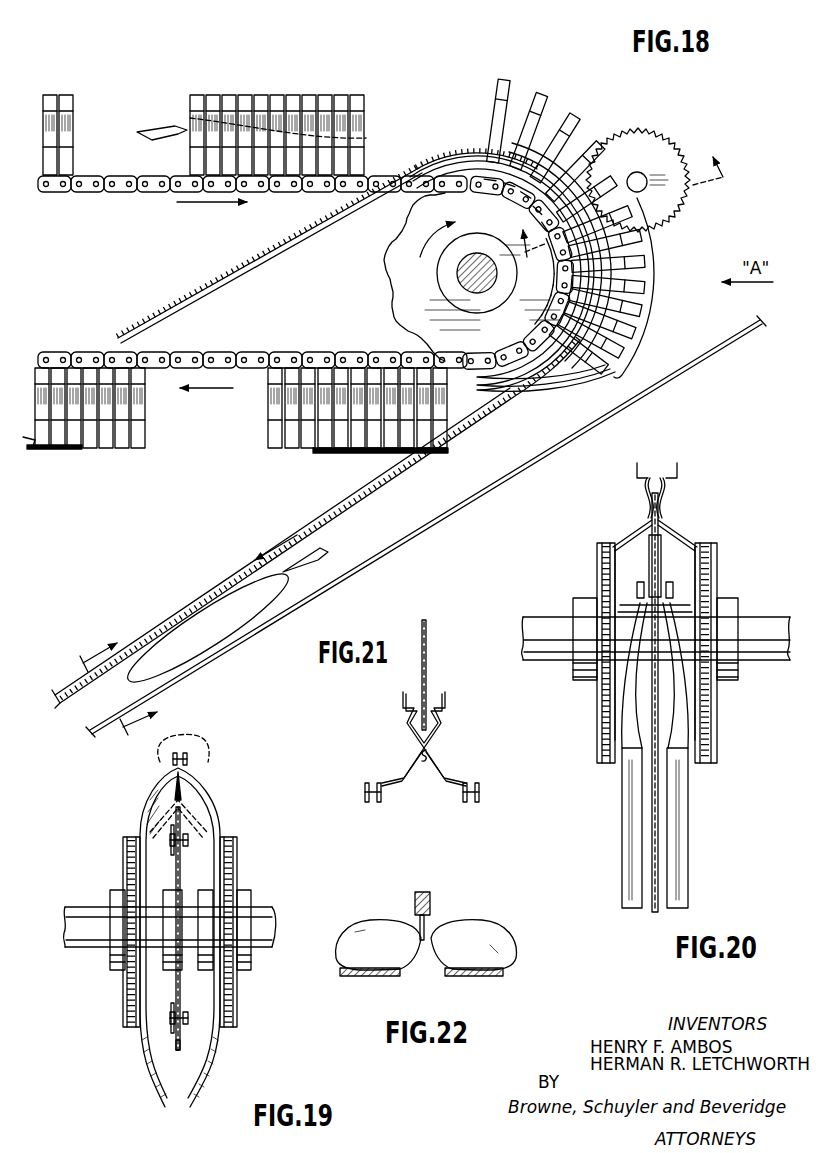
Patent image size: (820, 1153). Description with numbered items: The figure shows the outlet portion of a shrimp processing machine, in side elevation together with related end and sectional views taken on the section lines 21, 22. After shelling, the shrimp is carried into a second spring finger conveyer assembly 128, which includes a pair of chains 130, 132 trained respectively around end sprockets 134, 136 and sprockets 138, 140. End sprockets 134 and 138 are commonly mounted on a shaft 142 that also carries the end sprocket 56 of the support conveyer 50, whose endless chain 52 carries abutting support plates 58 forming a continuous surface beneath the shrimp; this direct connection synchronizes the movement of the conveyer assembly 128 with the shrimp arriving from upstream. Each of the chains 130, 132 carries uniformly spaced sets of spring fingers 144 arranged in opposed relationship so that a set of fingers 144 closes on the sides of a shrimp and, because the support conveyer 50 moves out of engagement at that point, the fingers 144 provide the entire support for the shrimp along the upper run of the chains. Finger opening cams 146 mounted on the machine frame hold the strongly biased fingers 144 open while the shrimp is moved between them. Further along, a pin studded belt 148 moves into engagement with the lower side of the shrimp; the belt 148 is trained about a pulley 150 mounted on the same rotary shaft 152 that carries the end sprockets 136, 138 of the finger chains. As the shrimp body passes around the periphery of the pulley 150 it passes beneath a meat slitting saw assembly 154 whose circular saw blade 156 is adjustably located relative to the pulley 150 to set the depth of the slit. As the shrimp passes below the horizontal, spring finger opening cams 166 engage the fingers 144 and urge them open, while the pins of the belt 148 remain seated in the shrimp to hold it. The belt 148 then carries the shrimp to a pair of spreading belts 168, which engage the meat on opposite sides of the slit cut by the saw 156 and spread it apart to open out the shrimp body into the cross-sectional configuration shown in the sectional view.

In FIG. 18, the second spring finger conveyer assembly 128 is at (396, 108).
In FIG. 20, the second spring finger conveyer assembly 128 is at (727, 533).
In FIG. 18, the chain 130 is at (255, 353).
In FIG. 19, the chain 130 is at (236, 838).
In FIG. 20, the chain 130 is at (599, 545).
In FIG. 21, the chain 130 is at (365, 795).
In FIG. 19, the chain 132 is at (124, 838).
In FIG. 20, the chain 132 is at (718, 552).
In FIG. 21, the chain 132 is at (482, 795).
In FIG. 19, the end sprocket 134 is at (238, 897).
In FIG. 18, the end sprocket 136 is at (425, 290).
In FIG. 20, the end sprocket 136 is at (580, 683).
In FIG. 19, the end sprocket 138 is at (123, 872).
In FIG. 20, the end sprocket 140 is at (730, 683).
In FIG. 19, the shaft 142 is at (255, 927).
In FIG. 18, the spring fingers 144 is at (76, 127).
In FIG. 19, the spring fingers 144 is at (208, 737).
In FIG. 20, the spring fingers 144 is at (674, 468).
In FIG. 21, the spring fingers 144 is at (402, 770).
In FIG. 18, the finger opening cams 146 is at (50, 452).
In FIG. 19, the finger opening cams 146 is at (143, 1074).
In FIG. 18, the pin studded belt 148 is at (292, 242).
In FIG. 21, the pin studded belt 148 is at (424, 758).
In FIG. 22, the pin studded belt 148 is at (430, 900).
In FIG. 18, the pulley 150 is at (361, 296).
In FIG. 18, the rotary shaft 152 is at (478, 264).
In FIG. 20, the rotary shaft 152 is at (540, 623).
In FIG. 18, the meat slitting saw assembly 154 is at (710, 126).
In FIG. 18, the circular saw blade 156 is at (642, 143).
In FIG. 20, the circular saw blade 156 is at (660, 527).
In FIG. 21, the circular saw blade 156 is at (426, 645).
In FIG. 18, the spring finger opening cams 166 is at (618, 378).
In FIG. 20, the spreading belts 168 is at (622, 828).
In FIG. 22, the spreading belts 168 is at (352, 977).
In FIG. 19, the support conveyer 50 is at (168, 840).
In FIG. 19, the endless chain 52 is at (189, 1018).
In FIG. 19, the end sprocket 56 is at (182, 870).
In FIG. 19, the support plate 58 is at (187, 1048).
In FIG. 18, the section line 21- 21 is at (631, 217).
In FIG. 18, the section line 22- 22 is at (106, 697).